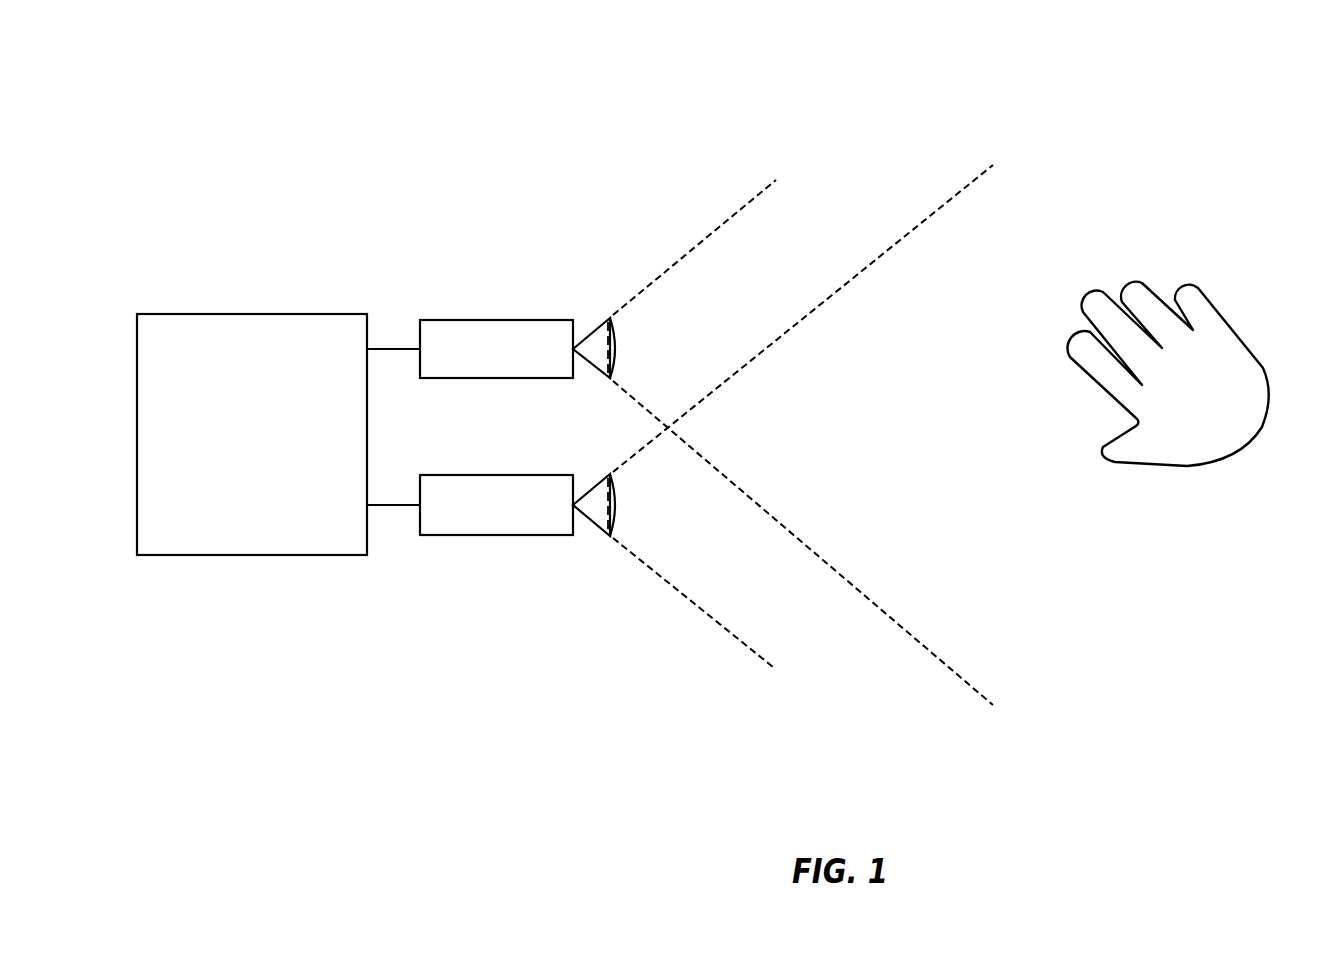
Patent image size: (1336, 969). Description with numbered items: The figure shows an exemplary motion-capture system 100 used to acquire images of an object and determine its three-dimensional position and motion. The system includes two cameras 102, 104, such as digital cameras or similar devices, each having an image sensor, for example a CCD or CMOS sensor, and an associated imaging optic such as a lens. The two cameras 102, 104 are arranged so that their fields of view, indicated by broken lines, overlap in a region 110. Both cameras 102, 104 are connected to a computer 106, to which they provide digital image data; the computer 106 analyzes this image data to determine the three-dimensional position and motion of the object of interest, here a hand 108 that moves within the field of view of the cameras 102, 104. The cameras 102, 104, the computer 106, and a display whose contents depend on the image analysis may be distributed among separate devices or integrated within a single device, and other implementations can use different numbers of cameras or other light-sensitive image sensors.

The motion-capture system 100 is at (1218, 63).
The camera 102 is at (494, 475).
The camera 104 is at (494, 320).
The computer 106 is at (247, 314).
The hand 108 is at (1237, 332).
The region 110 is at (1022, 430).